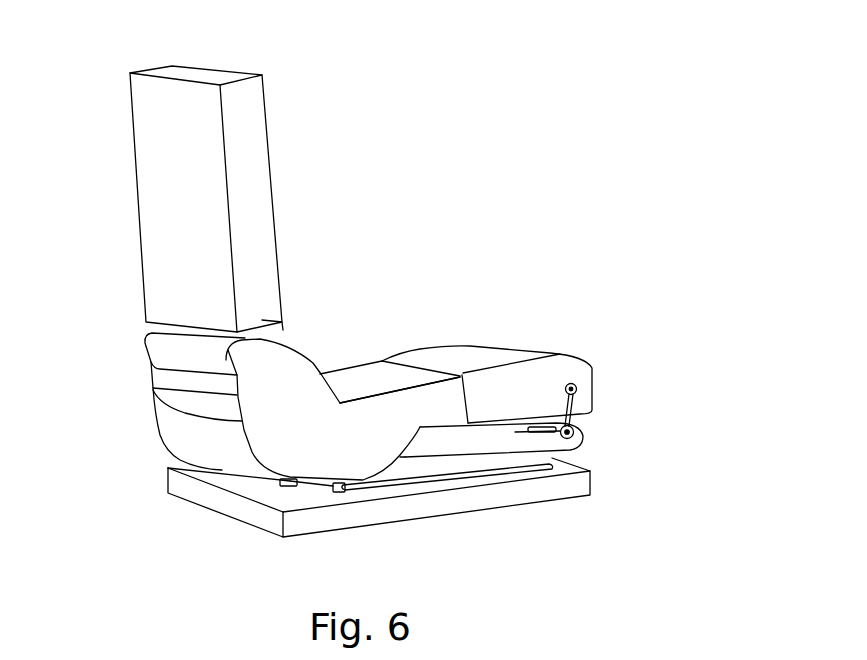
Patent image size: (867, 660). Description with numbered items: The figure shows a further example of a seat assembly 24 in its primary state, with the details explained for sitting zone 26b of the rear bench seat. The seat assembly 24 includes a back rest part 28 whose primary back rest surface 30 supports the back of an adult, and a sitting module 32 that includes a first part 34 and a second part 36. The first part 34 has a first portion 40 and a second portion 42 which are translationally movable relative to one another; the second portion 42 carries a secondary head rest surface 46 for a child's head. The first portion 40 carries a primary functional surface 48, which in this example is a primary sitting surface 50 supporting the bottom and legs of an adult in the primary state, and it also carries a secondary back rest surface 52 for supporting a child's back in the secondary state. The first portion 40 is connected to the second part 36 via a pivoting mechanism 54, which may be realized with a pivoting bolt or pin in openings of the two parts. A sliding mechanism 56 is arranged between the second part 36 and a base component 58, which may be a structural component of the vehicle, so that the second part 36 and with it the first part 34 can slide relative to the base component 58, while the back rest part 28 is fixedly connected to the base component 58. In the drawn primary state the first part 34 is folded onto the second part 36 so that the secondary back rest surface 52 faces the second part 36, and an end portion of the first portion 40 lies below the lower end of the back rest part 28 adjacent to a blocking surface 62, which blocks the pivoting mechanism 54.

The seat assembly 24 is at (547, 77).
The sitting zone 26b is at (434, 126).
The back rest part 28 is at (233, 112).
The primary back rest surface 30 is at (281, 116).
The sitting module 32 is at (646, 453).
The first part 34 is at (449, 337).
The second part 36 is at (443, 457).
The first portion 40 is at (490, 358).
The second portion 42 is at (378, 418).
The secondary head rest surface 46 is at (190, 426).
The primary functional surface 48 is at (480, 337).
The primary sitting surface 50 is at (401, 337).
The secondary back rest surface 52 is at (232, 457).
The pivoting mechanism 54 is at (598, 421).
The sliding mechanism 56 is at (571, 467).
The base component 58 is at (253, 512).
The blocking surface 62 is at (287, 331).